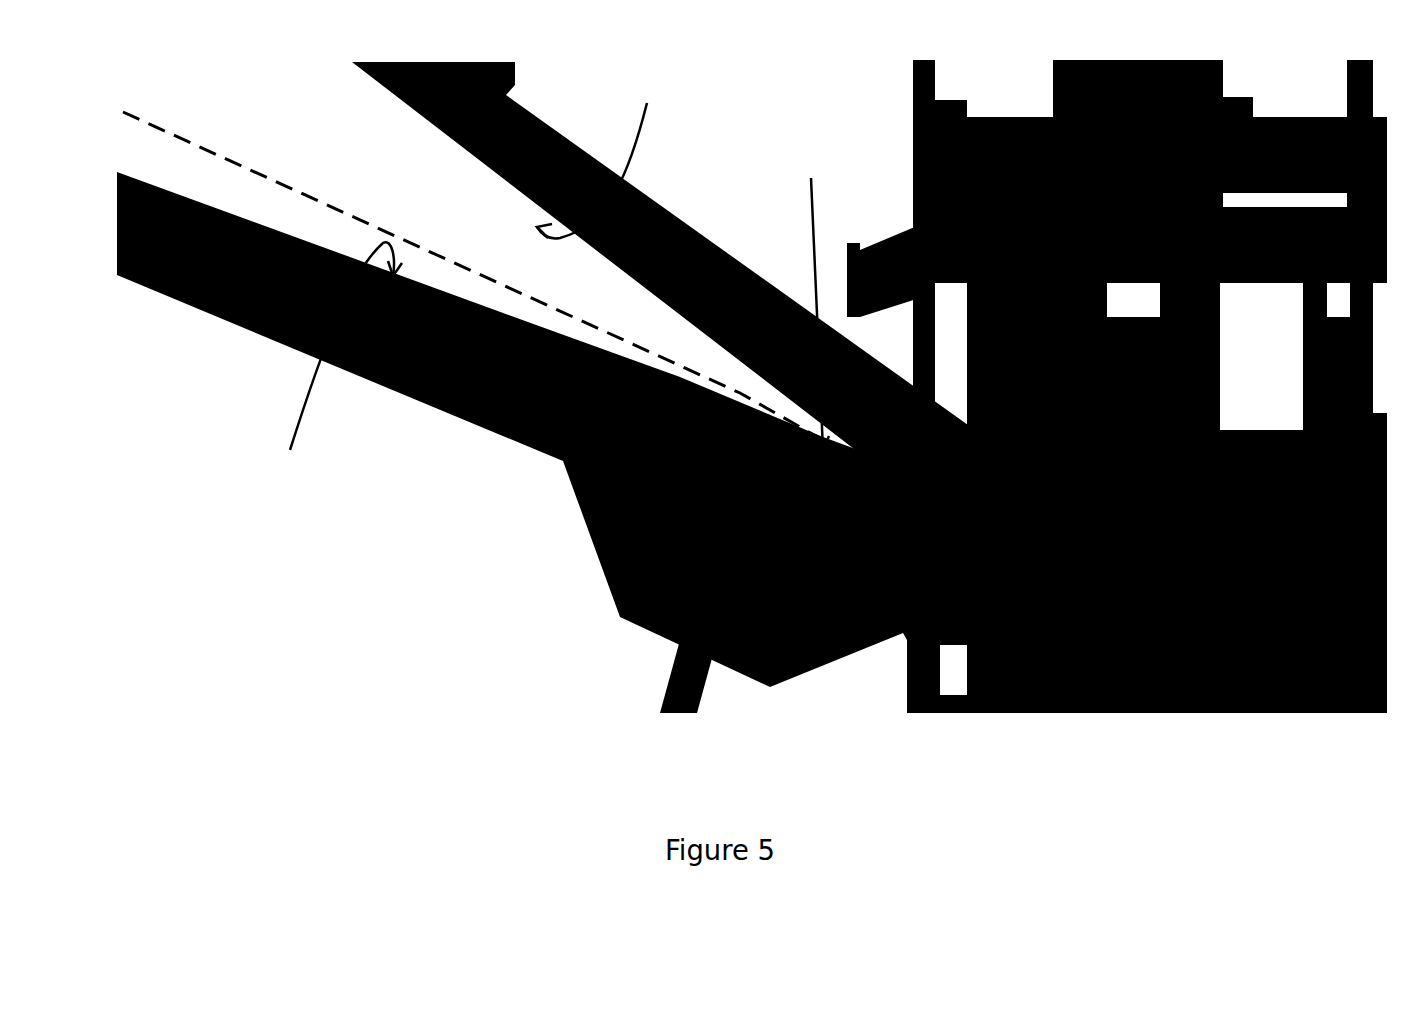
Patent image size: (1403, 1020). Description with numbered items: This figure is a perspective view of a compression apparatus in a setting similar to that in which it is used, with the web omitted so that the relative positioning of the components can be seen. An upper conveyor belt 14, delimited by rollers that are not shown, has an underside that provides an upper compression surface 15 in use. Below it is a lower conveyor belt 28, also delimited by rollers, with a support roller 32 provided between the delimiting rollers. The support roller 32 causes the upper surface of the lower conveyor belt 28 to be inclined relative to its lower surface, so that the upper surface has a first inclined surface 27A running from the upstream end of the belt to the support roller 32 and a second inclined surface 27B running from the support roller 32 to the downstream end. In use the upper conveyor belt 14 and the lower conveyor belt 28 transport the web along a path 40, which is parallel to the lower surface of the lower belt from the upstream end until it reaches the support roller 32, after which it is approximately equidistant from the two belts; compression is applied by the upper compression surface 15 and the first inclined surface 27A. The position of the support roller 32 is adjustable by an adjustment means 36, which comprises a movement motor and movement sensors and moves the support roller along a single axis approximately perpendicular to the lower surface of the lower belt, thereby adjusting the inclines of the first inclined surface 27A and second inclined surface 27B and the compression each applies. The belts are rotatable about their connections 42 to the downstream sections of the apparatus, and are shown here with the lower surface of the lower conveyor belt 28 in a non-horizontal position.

The upper conveyor belt 14 is at (667, 216).
The upper compression surface 15 is at (599, 157).
The first inclined surface 27A is at (333, 368).
The second inclined surface 27B is at (807, 301).
The lower conveyor belt 28 is at (568, 357).
The support roller 32 is at (763, 463).
The adjustment means 36 is at (697, 693).
The path 40 is at (253, 172).
The connections 42 is at (1100, 577).